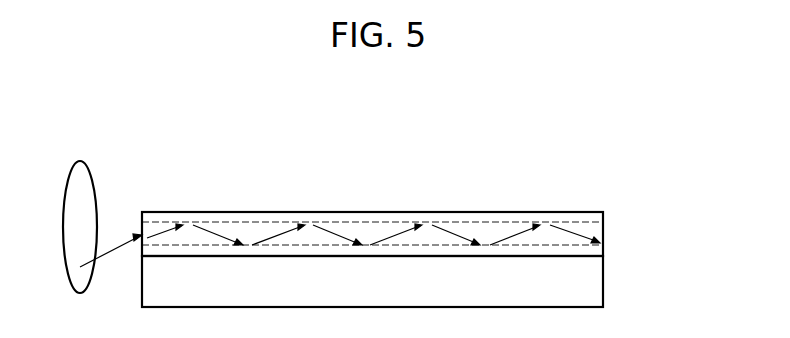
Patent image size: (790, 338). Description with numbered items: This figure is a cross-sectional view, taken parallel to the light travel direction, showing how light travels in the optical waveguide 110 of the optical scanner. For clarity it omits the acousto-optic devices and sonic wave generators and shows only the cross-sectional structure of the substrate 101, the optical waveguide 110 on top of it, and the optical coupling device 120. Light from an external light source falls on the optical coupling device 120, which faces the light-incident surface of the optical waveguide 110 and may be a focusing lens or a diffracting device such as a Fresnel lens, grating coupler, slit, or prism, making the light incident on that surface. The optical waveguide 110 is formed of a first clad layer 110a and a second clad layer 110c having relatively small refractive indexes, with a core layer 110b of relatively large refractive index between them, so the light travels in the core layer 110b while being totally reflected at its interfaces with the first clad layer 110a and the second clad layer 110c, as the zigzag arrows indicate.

The substrate 101 is at (603, 292).
The optical waveguide 110 is at (550, 212).
The first clad layer 110a is at (603, 255).
The core layer 110b is at (603, 237).
The second clad layer 110c is at (603, 217).
The optical coupling device 120 is at (83, 162).